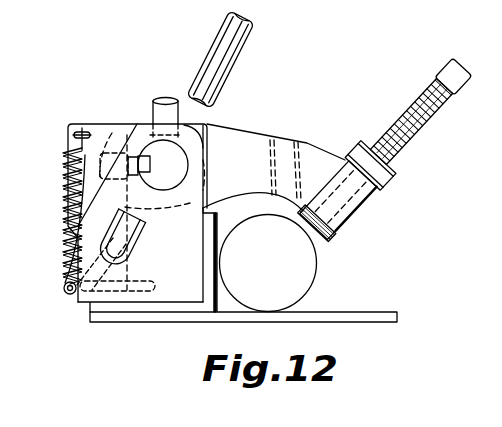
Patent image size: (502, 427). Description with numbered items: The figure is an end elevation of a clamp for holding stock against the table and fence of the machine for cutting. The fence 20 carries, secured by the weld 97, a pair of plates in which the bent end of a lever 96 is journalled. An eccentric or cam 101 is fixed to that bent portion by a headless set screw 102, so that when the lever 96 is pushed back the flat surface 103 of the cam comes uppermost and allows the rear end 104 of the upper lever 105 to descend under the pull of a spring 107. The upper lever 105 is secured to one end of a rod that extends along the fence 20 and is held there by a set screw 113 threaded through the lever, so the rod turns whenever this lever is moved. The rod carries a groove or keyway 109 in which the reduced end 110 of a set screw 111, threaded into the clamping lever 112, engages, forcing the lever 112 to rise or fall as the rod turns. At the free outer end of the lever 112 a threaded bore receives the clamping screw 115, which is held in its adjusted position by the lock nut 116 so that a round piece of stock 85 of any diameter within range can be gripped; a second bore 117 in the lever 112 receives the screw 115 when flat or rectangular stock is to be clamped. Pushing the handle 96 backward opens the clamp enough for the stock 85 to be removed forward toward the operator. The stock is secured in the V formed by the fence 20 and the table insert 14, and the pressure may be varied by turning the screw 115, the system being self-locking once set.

The table insert 14 is at (368, 312).
The fence 20 is at (92, 310).
The round piece of stock 85 is at (317, 264).
The lever 96 is at (250, 56).
The weld 97 is at (219, 210).
The cam 101 is at (156, 286).
The headless set screw 102 is at (61, 277).
The flat surface 103 is at (147, 265).
The rear end 104 is at (116, 126).
The upper lever 105 is at (208, 140).
The spring 107 is at (62, 231).
The groove or keyway 109 is at (147, 190).
The reduced end 110 is at (146, 163).
The set screw 111 is at (69, 170).
The lever 112 is at (333, 157).
The set screw 113 is at (162, 100).
The clamping screw 115 is at (415, 138).
The lock nut 116 is at (381, 185).
The second bore 117 is at (284, 142).